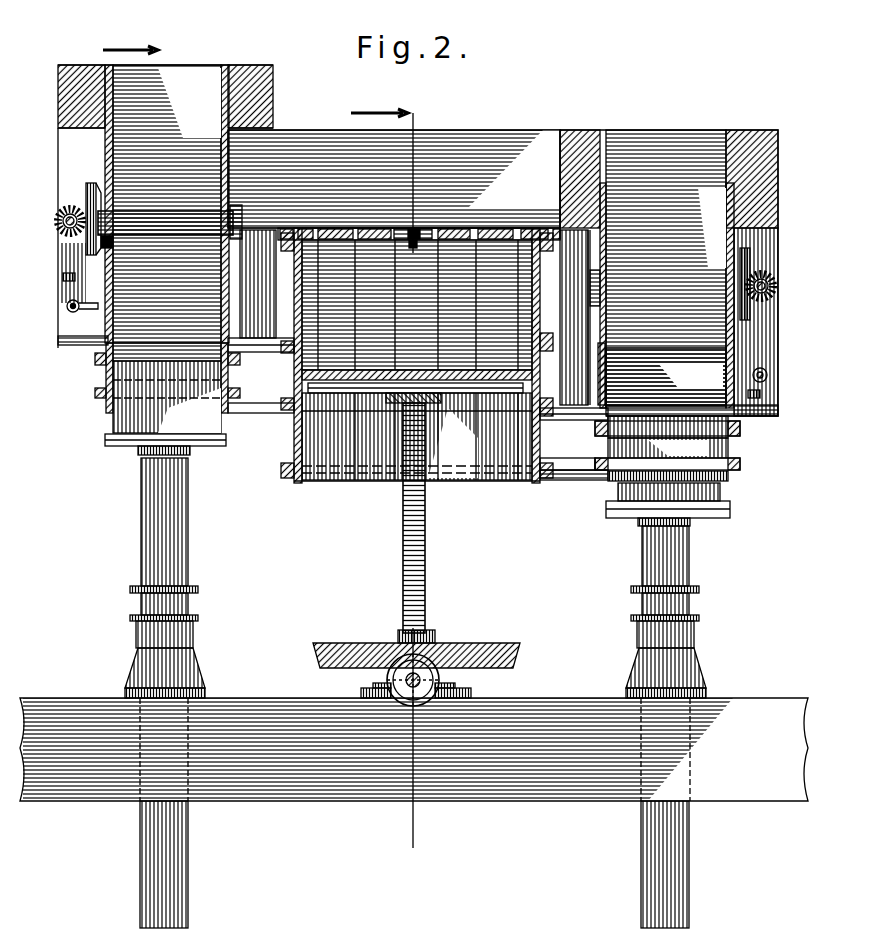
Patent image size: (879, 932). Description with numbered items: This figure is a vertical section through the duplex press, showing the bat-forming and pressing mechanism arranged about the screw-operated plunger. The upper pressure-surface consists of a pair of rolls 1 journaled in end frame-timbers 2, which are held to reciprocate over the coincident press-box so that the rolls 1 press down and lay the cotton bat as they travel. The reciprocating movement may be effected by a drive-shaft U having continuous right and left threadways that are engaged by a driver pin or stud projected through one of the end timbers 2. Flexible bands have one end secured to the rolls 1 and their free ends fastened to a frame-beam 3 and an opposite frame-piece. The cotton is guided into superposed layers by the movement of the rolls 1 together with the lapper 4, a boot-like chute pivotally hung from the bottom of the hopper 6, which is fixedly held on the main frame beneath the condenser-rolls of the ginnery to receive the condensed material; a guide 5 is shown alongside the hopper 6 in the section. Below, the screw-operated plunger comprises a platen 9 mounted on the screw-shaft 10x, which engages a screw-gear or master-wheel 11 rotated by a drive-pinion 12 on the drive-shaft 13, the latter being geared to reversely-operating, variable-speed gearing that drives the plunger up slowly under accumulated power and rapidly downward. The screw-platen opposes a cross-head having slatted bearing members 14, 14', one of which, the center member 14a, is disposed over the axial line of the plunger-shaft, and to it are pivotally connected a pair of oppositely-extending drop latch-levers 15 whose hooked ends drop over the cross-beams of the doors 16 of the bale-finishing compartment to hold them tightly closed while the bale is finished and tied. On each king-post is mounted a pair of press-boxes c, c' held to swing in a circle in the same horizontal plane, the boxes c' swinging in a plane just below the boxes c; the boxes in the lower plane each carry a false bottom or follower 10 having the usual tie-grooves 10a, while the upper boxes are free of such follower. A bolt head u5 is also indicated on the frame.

The rolls 1 is at (175, 205).
The end frame-timbers 2 is at (92, 308).
The frame-beam 3 is at (153, 300).
The lapper 4 is at (412, 479).
The guide 5 is at (232, 280).
The hopper 6 is at (418, 240).
The platen 9 is at (443, 401).
The false bottom or follower 10 is at (440, 372).
The tie-grooves 10a is at (470, 372).
The screw-shaft 10x is at (418, 548).
The screw-gear or master-wheel 11 is at (334, 638).
The drive-pinion 12 is at (440, 668).
The drive-shaft 13 is at (378, 672).
The slatted bearing members 14 is at (419, 222).
The center member 14a is at (415, 225).
The top bar 14' is at (499, 221).
The drop latch-levers 15 is at (405, 232).
The doors 16 is at (520, 280).
The drive-shaft U is at (58, 300).
The bolt head u5 is at (430, 338).
The press-boxes c is at (313, 355).
The press-boxes c' is at (545, 467).